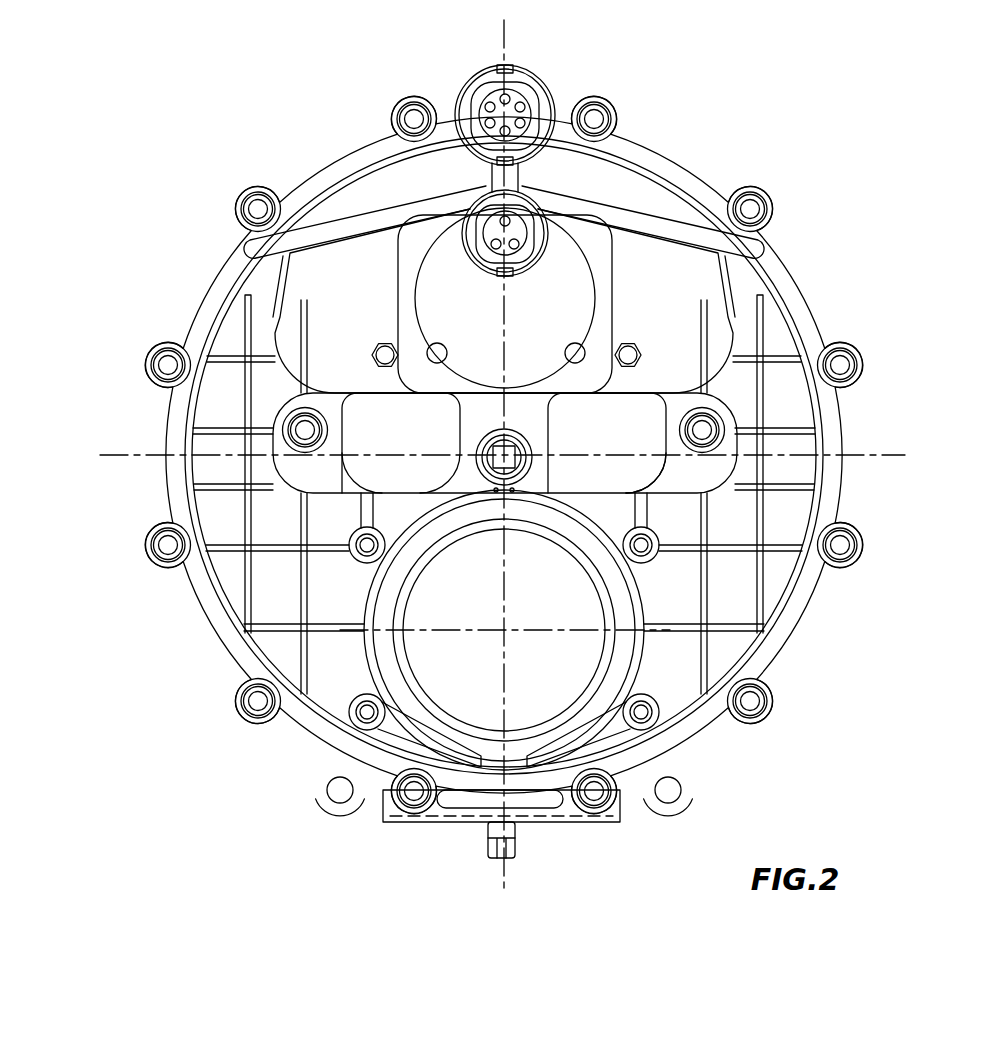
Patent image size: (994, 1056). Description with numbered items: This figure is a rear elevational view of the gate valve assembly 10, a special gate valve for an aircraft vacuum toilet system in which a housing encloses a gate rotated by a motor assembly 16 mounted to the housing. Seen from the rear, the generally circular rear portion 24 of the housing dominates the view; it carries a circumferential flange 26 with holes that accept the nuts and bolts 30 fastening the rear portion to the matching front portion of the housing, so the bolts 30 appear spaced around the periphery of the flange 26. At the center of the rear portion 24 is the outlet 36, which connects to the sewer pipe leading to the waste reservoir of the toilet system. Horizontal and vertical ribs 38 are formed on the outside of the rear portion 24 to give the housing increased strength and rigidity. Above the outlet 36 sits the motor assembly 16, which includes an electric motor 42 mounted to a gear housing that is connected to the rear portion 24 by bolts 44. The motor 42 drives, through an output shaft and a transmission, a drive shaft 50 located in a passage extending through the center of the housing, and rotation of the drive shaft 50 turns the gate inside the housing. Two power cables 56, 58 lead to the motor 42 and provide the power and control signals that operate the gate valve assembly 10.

The gate valve assembly 10 is at (262, 848).
The motor assembly 16 is at (672, 168).
The rear portion 24 is at (680, 690).
The circumferential flange 26 is at (796, 300).
The nuts and bolts 30 is at (862, 555).
The outlet 36 is at (457, 687).
The horizontal and vertical ribs 38 is at (767, 385).
The electric motor 42 is at (575, 292).
The bolts 44 is at (288, 415).
The drive shaft 50 is at (527, 450).
The power cable 56 is at (323, 210).
The power cable 58 is at (688, 222).